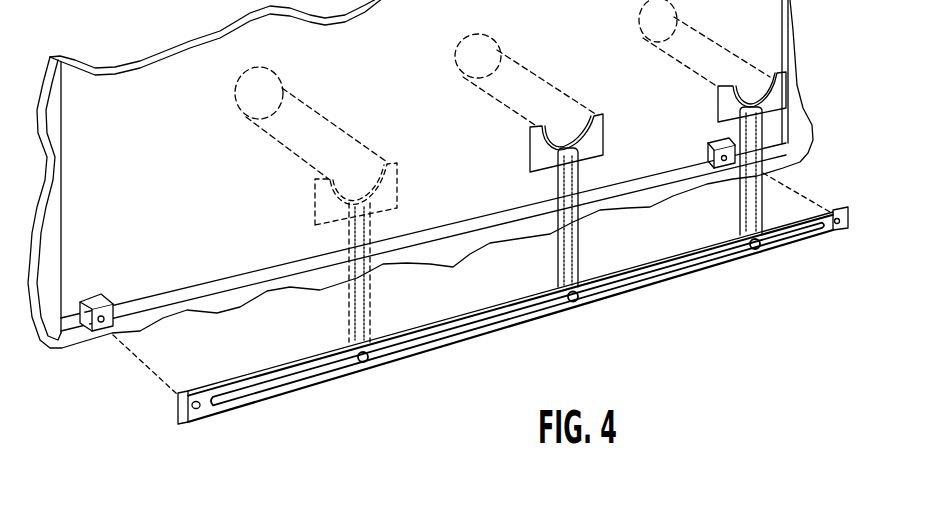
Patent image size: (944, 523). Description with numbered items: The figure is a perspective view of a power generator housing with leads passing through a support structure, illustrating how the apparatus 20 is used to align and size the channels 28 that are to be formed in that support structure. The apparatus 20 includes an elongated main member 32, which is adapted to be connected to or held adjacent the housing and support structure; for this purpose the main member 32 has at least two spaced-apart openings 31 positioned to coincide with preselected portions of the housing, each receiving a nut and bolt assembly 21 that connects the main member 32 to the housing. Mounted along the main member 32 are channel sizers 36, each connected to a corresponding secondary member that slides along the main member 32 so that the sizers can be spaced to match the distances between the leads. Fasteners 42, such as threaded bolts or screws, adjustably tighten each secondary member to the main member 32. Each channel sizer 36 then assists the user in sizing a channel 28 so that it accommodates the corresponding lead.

The apparatus 20 is at (493, 360).
The nut and bolt assembly 21 is at (93, 327).
The spaced-apart channels 28 is at (273, 70).
The openings 31 is at (180, 406).
The main member 32 is at (186, 421).
The channel sizer 36 is at (397, 163).
The fasteners 42 is at (363, 363).